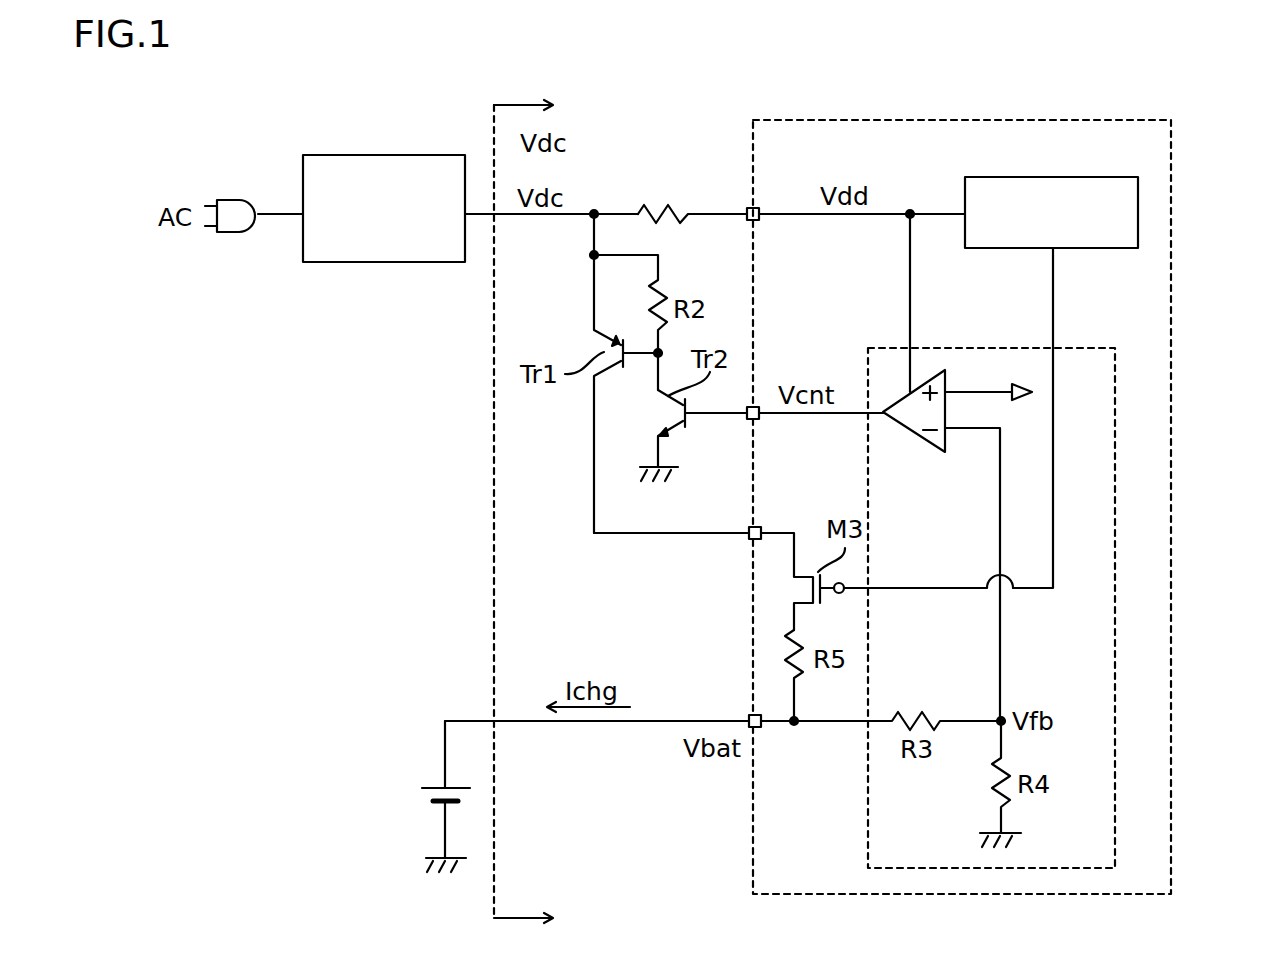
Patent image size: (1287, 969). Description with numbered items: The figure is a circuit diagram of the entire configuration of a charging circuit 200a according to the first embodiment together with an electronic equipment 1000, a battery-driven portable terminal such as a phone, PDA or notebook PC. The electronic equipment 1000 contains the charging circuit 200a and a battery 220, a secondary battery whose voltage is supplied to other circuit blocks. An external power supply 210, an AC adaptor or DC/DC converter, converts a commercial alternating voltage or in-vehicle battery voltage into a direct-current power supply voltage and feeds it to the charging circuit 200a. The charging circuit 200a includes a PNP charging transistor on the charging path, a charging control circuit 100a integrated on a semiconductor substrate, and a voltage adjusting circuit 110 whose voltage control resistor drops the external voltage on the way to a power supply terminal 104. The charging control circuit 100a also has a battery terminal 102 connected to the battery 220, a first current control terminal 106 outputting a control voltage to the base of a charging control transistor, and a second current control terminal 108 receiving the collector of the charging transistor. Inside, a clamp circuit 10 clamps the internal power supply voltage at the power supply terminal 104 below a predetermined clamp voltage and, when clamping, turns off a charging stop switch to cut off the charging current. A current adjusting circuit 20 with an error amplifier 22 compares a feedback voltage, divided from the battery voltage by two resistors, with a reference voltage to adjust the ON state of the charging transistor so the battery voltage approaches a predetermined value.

The external power supply 210 is at (418, 155).
The voltage adjusting circuit 110 is at (690, 186).
The power supply terminal 104 is at (758, 221).
The first current control terminal 106 is at (758, 420).
The second current control terminal 108 is at (748, 538).
The battery terminal 102 is at (760, 727).
The clamp circuit 10 is at (1082, 177).
The current adjusting circuit 20 is at (1078, 348).
The error amplifier 22 is at (912, 436).
The charging control circuit 100a is at (1018, 120).
The electronic equipment 1000 is at (397, 736).
The charging circuit 200a is at (494, 601).
The battery 220 is at (437, 786).